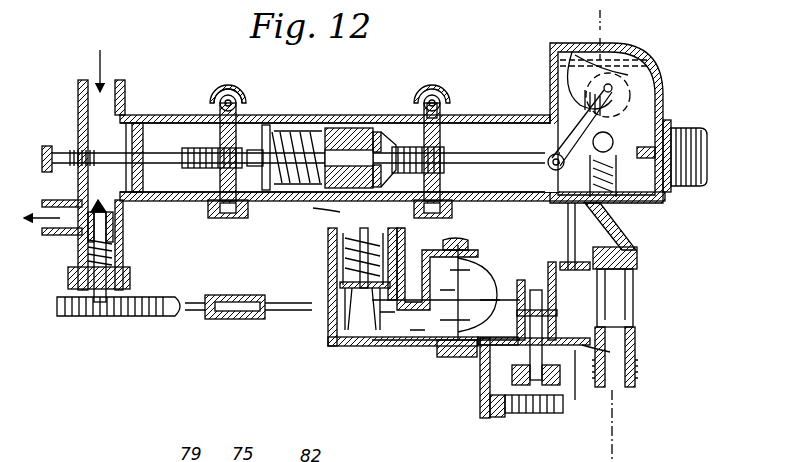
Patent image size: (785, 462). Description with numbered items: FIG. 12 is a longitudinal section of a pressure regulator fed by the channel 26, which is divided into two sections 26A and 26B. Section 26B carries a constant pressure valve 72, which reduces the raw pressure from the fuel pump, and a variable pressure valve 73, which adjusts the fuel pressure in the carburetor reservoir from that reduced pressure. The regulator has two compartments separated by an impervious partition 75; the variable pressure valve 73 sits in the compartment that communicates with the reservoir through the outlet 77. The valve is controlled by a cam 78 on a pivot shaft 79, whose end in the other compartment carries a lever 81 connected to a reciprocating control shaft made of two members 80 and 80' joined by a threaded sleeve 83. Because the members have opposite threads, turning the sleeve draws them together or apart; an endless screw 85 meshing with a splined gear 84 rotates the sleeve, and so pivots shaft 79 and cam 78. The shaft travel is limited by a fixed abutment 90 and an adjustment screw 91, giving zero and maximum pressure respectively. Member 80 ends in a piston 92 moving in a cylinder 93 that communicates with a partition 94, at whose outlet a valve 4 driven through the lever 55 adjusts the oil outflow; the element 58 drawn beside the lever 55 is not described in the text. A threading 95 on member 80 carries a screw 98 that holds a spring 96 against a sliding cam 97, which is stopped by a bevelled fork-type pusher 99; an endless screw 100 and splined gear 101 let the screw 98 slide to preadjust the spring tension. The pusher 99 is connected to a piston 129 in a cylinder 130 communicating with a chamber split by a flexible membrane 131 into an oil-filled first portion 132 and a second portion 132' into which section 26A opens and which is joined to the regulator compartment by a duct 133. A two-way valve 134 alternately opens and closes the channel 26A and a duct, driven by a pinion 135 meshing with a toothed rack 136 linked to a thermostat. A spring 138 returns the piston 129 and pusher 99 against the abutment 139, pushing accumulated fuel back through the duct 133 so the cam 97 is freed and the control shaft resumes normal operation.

The valve 4 is at (80, 232).
The channel 26 is at (640, 380).
The section of the channel 26A is at (578, 360).
The section of the channel 26B is at (630, 230).
The lever 55 is at (290, 310).
The knurled knob 58 is at (220, 319).
The constant pressure valve 72 is at (636, 290).
The variable pressure valve 73 is at (665, 206).
The impervious partition 75 is at (628, 45).
The outlet 77 is at (690, 128).
The cam 78 is at (556, 110).
The pivot shaft 79 is at (612, 88).
The member of the control shaft 80 is at (392, 142).
The member of the control shaft 80' is at (481, 141).
The lever 81 is at (576, 55).
The threaded sleeve 83 is at (400, 146).
The gear 84 is at (444, 100).
The endless screw 85 is at (432, 90).
The fixed abutment 90 is at (645, 130).
The adjustment screw 91 is at (46, 147).
The piston 92 is at (140, 128).
The cylinder 93 is at (164, 200).
The partition 94 is at (78, 112).
The threading 95 is at (192, 147).
The spring 96 is at (342, 126).
The sliding cam 97 is at (366, 128).
The screw 98 is at (334, 86).
The fork-type pusher member 99 is at (304, 216).
The endless screw 100 is at (236, 92).
The gear 101 is at (255, 128).
The piston 129 is at (340, 325).
The cylinder 130 is at (360, 230).
The membrane 131 is at (500, 295).
The first portion of the chamber 132 is at (446, 300).
The second portion of the chamber 132' is at (443, 235).
The duct 133 is at (565, 262).
The two-way valve 134 is at (530, 368).
The pinion 135 is at (512, 415).
The toothed rack 136 is at (495, 410).
The spring 138 is at (343, 268).
The abutment 139 is at (350, 338).